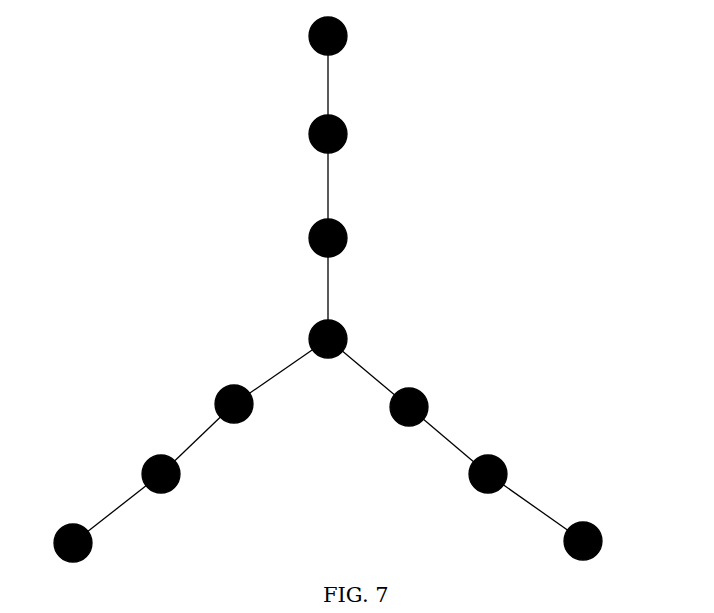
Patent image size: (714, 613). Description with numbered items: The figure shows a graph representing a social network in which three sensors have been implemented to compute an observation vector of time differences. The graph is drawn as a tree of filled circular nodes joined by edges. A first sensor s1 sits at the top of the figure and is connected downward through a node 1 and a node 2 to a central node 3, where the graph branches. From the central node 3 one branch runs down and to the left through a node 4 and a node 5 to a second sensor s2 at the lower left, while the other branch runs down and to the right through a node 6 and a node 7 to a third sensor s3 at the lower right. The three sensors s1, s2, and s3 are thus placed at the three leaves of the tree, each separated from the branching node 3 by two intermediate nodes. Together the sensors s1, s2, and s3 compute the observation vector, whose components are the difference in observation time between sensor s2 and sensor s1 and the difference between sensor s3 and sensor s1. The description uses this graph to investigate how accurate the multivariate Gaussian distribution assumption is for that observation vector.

The sensor s1 is at (343, 36).
The node 1 is at (338, 134).
The node 2 is at (336, 238).
The node 3 is at (336, 339).
The node 4 is at (229, 396).
The node 5 is at (154, 465).
The sensor s2 is at (61, 543).
The node 6 is at (419, 407).
The node 7 is at (499, 474).
The sensor s3 is at (595, 541).